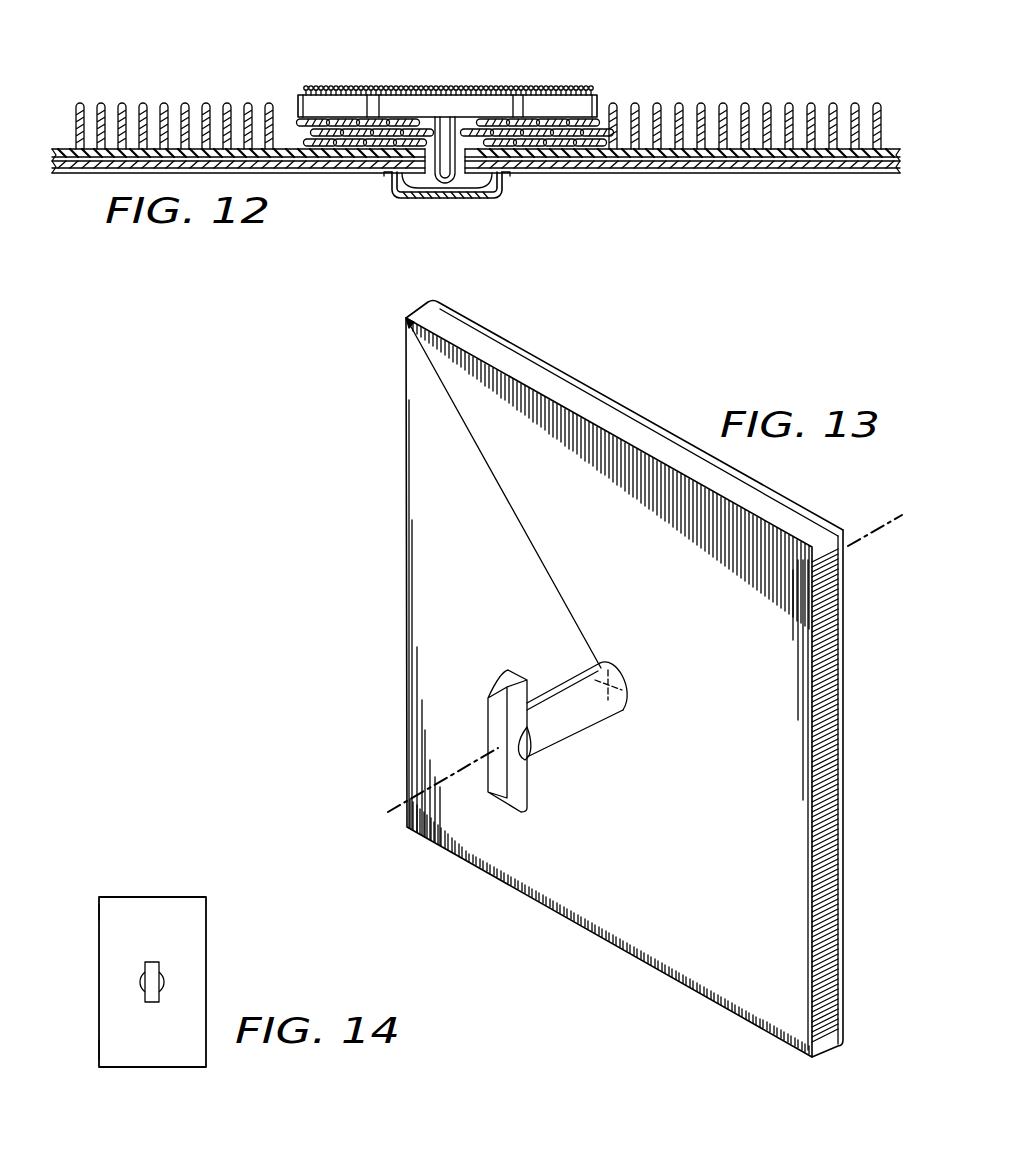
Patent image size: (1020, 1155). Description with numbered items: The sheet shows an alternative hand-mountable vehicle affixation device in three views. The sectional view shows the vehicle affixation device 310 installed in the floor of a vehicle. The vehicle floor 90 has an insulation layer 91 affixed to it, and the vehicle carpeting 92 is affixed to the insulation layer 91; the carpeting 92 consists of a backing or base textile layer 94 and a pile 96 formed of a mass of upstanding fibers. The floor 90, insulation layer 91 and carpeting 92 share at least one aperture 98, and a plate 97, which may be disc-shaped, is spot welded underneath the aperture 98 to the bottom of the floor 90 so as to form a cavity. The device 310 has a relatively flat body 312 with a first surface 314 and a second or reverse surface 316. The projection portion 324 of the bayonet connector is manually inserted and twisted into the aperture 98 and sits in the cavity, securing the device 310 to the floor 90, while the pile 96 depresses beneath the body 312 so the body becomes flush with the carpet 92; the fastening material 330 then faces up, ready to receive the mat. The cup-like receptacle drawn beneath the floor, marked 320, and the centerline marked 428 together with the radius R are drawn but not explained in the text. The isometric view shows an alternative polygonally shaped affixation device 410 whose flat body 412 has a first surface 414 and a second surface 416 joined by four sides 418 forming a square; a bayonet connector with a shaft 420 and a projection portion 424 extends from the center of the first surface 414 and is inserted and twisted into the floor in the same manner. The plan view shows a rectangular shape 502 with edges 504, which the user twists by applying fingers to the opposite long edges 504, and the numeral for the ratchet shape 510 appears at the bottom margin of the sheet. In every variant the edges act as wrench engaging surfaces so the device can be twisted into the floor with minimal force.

In FIG. 12, the vehicle floor 90 is at (835, 172).
In FIG. 12, the insulation layer 91 is at (728, 165).
In FIG. 12, the vehicle carpeting 92 is at (479, 149).
In FIG. 12, the base textile layer 94 is at (787, 153).
In FIG. 12, the pile 96 is at (797, 102).
In FIG. 12, the plate 97 is at (390, 182).
In FIG. 12, the aperture 98 is at (496, 188).
In FIG. 12, the vehicle affixation device 310 is at (452, 69).
In FIG. 12, the body 312 is at (602, 97).
In FIG. 12, the first surface 314 is at (527, 130).
In FIG. 12, the second surface 316 is at (297, 98).
In FIG. 12, the receptacle cup 320 is at (445, 192).
In FIG. 12, the projection portion 324 is at (466, 192).
In FIG. 12, the fastening material 330 is at (398, 87).
In FIG. 13, the polygonally shaped affixation device 410 is at (607, 679).
In FIG. 13, the body 412 is at (586, 388).
In FIG. 13, the first surface 414 is at (593, 890).
In FIG. 13, the second surface 416 is at (661, 679).
In FIG. 13, the sides 418 is at (647, 426).
In FIG. 13, the shaft 420 is at (578, 735).
In FIG. 13, the projection portion 424 is at (512, 672).
In FIG. 13, the axis line 428 is at (890, 516).
In FIG. 13, the radius R is at (512, 509).
In FIG. 14, the rectangular shape 502 is at (188, 875).
In FIG. 14, the edges 504 is at (93, 908).
In FIG. 13, the ratchet shape 510 is at (591, 1148).